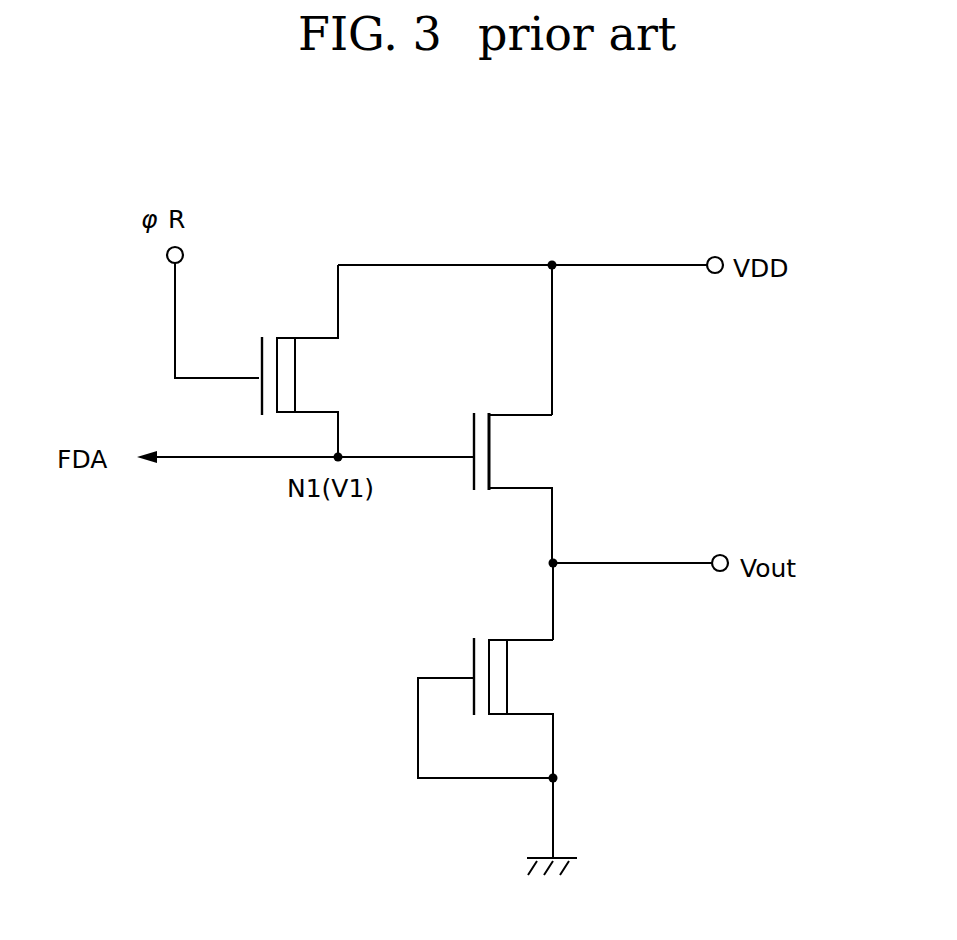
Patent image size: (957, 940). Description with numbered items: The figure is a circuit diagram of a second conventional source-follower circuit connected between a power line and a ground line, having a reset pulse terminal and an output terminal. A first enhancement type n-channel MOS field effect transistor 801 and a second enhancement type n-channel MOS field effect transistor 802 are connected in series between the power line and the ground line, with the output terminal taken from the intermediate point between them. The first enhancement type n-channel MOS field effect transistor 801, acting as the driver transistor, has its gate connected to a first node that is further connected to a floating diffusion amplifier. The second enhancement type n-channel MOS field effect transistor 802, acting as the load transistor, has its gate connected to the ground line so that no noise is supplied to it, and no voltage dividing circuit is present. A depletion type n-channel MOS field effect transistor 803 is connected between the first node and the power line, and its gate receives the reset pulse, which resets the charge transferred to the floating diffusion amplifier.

The first enhancement type n-channel MOS field effect transistor 801 is at (542, 488).
The second enhancement type n-channel MOS field effect transistor 802 is at (514, 710).
The depletion type n-channel MOS field effect transistor 803 is at (319, 361).